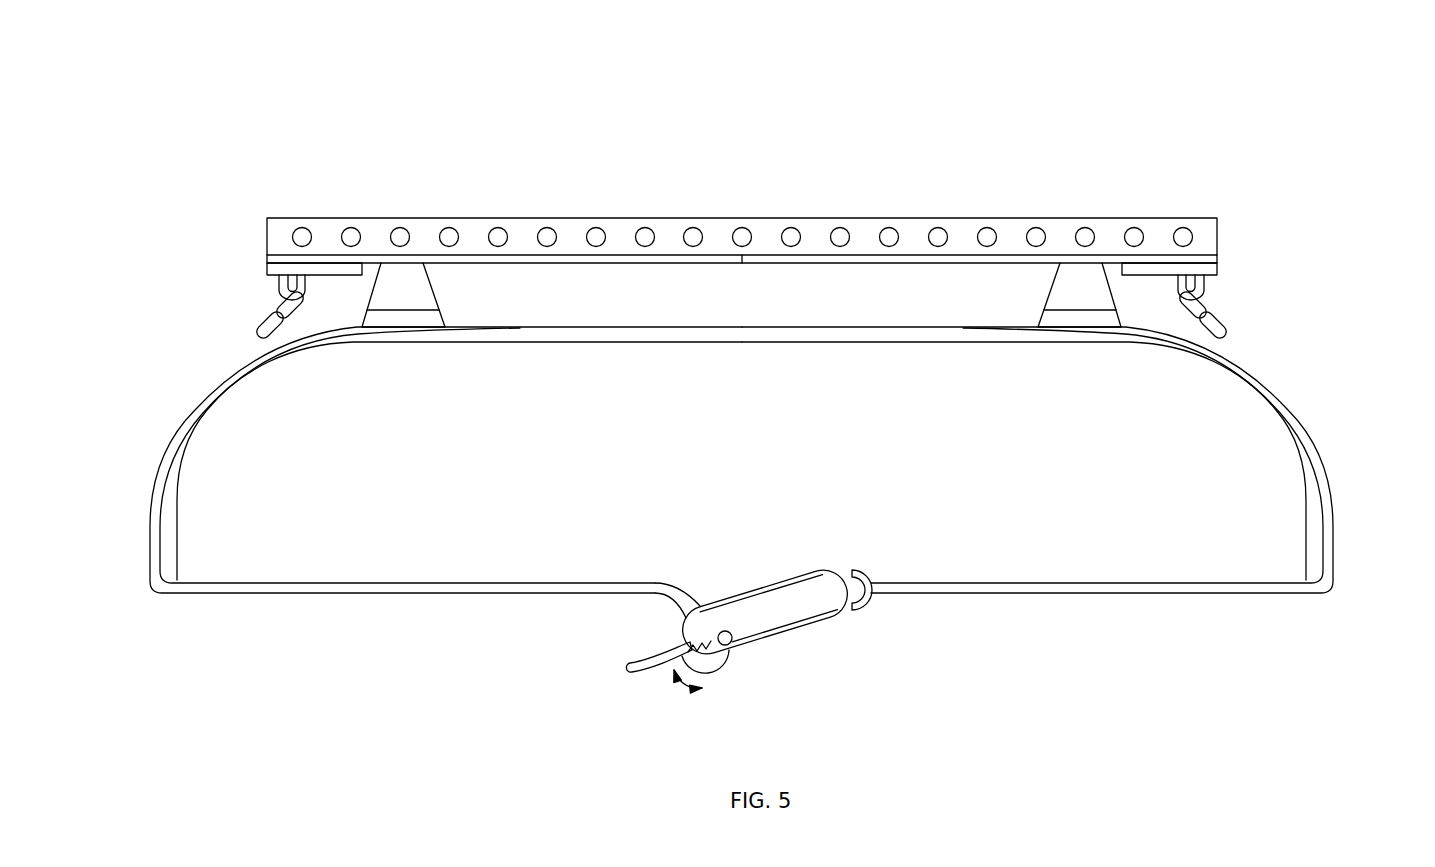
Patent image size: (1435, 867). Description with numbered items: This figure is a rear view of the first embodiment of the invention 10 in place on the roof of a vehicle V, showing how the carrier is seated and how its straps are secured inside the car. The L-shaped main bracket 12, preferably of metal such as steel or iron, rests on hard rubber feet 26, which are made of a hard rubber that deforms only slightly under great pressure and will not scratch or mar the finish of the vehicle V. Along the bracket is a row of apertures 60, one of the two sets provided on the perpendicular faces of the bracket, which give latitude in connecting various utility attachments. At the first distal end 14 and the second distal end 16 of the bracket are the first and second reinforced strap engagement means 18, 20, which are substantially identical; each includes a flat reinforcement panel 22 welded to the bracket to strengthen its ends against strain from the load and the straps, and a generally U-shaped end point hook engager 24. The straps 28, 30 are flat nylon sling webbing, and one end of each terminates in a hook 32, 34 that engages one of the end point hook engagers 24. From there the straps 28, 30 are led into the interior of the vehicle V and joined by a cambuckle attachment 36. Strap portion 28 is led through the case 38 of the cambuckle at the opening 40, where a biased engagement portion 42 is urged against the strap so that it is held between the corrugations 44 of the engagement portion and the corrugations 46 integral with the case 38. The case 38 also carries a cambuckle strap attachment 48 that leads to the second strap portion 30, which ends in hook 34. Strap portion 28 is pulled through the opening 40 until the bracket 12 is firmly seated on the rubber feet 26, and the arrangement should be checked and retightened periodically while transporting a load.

The invention 10 is at (313, 130).
The L-shaped main bracket 12 is at (1218, 183).
The first distal end 14 is at (267, 233).
The second distal end 16 is at (1217, 232).
The first reinforced strap engagement means 18 is at (212, 296).
The second reinforced strap engagement means 20 is at (1283, 289).
The flat reinforcement panel 22 is at (267, 268).
The end point hook engager 24 is at (280, 290).
The hard rubber feet 26 is at (445, 298).
The strap portion 28 is at (180, 410).
The strap portion 30 is at (1336, 508).
The hook 32 is at (255, 305).
The hook 34 is at (1228, 308).
The cambuckle attachment 36 is at (822, 632).
The cambuckle case 38 is at (810, 585).
The opening 40 is at (662, 676).
The biased engagement portion 42 is at (714, 668).
The corrugations 44 is at (708, 645).
The corrugations 46 is at (682, 628).
The cambuckle strap attachment 48 is at (855, 580).
The apertures 60 is at (648, 228).
The vehicle V is at (762, 345).